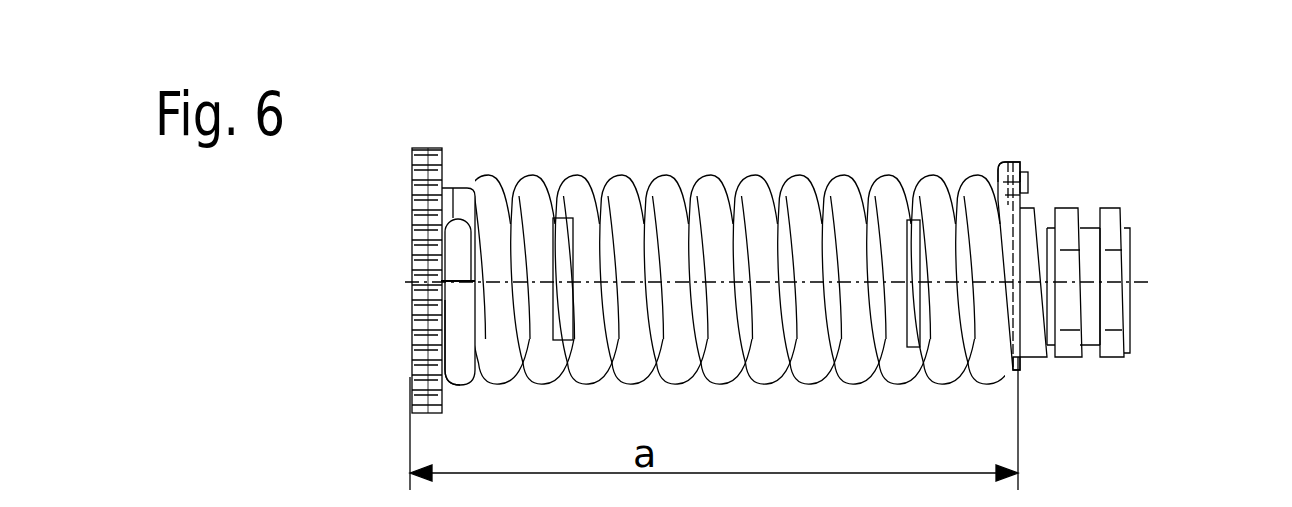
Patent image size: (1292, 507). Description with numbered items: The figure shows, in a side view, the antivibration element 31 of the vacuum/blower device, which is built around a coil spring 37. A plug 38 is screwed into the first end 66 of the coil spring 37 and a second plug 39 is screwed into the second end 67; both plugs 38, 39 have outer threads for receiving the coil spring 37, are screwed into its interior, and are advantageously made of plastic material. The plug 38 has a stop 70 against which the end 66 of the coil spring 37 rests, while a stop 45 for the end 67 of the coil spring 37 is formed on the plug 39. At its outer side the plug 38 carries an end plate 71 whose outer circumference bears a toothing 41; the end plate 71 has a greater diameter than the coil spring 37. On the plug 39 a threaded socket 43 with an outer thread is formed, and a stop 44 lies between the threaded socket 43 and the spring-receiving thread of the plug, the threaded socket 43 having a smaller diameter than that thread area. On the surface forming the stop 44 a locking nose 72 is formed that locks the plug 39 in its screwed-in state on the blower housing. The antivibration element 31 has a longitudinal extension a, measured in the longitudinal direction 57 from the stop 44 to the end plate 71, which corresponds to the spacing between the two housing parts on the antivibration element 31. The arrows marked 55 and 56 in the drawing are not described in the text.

The antivibration element 31 is at (1190, 145).
The coil spring 37 is at (706, 206).
The plug 38 is at (461, 207).
The second plug 39 is at (1002, 213).
The toothing 41 is at (430, 213).
The threaded socket 43 is at (1097, 245).
The stop 44 is at (1018, 360).
The stop 45 is at (1018, 163).
The drive unit 55 is at (377, 387).
The spindle unit 56 is at (1125, 400).
The longitudinal direction 57 is at (1137, 282).
The first end 66 is at (458, 343).
The second end 67 is at (990, 368).
The stop 70 is at (463, 267).
The end plate 71 is at (413, 323).
The locking nose 72 is at (1027, 175).